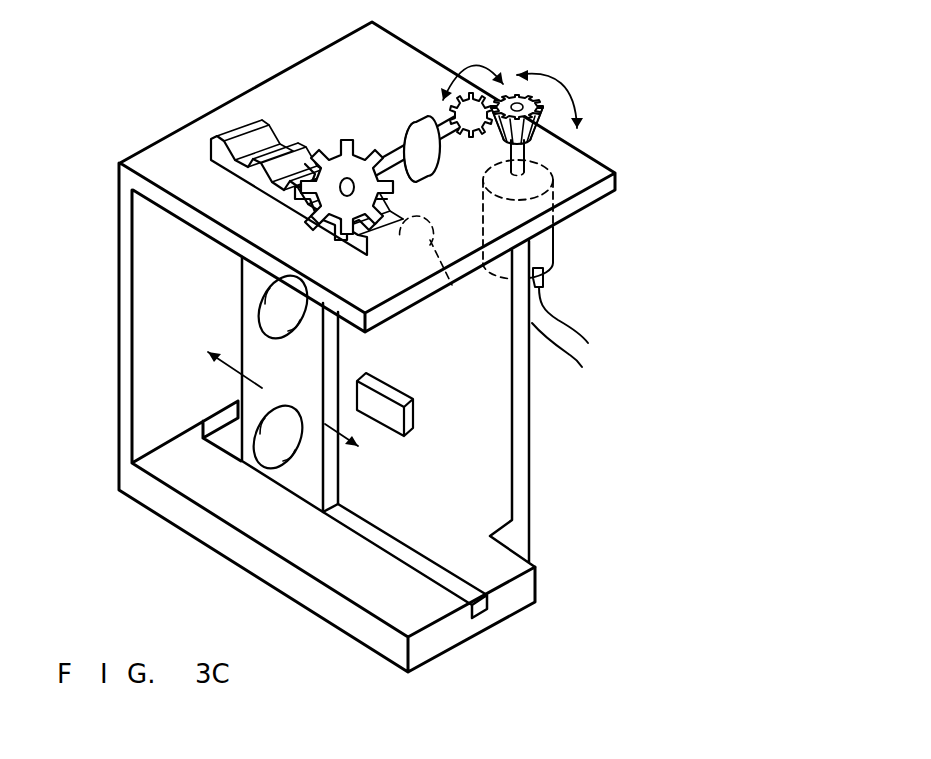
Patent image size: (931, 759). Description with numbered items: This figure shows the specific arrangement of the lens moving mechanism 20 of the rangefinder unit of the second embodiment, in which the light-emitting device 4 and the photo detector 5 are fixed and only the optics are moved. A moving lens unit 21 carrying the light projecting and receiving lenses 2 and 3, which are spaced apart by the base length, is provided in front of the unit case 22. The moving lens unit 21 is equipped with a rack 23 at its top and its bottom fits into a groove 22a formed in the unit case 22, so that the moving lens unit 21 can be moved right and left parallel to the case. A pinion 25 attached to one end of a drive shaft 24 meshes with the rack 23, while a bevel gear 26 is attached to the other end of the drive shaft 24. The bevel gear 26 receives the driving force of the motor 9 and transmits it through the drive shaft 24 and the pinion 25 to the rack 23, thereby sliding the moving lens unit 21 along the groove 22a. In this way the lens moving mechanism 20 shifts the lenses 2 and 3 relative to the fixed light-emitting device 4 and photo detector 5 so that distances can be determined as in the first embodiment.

The lens moving mechanism 20 is at (372, 68).
The moving lens unit 21 is at (323, 513).
The light projecting lens 2 is at (260, 305).
The light receiving lens 3 is at (270, 467).
The light-emitting device 4 is at (452, 286).
The photo detector 5 is at (414, 418).
The motor 9 is at (556, 248).
The unit case 22 is at (530, 527).
The groove 22a is at (485, 612).
The rack 23 is at (243, 128).
The drive shaft 24 is at (396, 148).
The pinion 25 is at (353, 127).
The bevel gear 26 is at (508, 88).